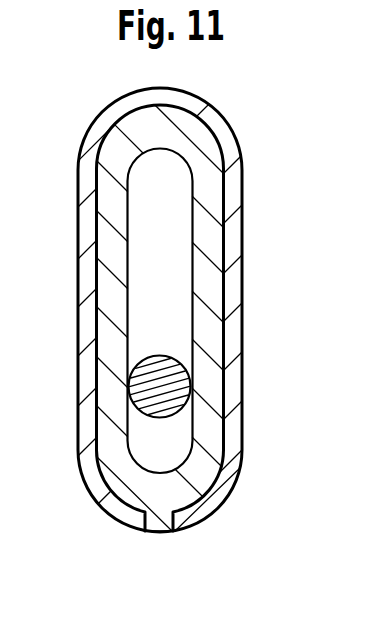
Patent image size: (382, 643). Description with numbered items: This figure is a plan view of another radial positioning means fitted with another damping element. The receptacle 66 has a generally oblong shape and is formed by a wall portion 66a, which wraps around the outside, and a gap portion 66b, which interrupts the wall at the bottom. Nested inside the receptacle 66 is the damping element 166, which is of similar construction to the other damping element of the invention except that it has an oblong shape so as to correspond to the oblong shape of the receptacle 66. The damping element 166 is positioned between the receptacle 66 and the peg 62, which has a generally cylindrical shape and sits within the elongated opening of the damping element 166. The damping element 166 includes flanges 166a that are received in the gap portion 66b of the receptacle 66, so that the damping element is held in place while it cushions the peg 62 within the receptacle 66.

The receptacle 66 is at (233, 196).
The damping element 166 is at (213, 281).
The peg 62 is at (170, 391).
The wall portion 66a is at (96, 481).
The gap portion 66b is at (160, 527).
The flanges 166a is at (165, 531).